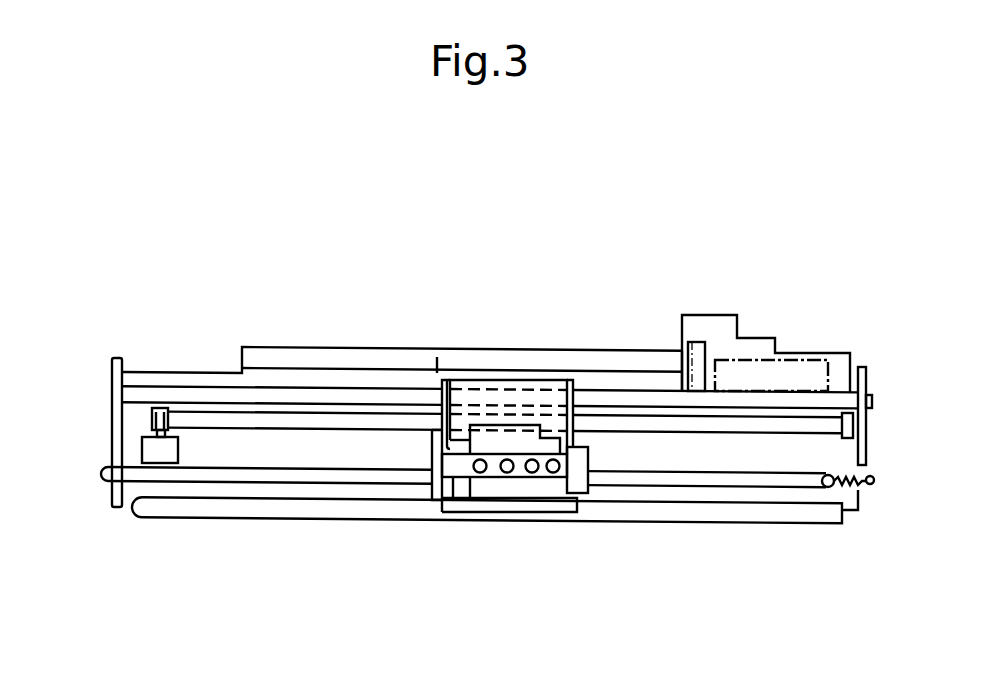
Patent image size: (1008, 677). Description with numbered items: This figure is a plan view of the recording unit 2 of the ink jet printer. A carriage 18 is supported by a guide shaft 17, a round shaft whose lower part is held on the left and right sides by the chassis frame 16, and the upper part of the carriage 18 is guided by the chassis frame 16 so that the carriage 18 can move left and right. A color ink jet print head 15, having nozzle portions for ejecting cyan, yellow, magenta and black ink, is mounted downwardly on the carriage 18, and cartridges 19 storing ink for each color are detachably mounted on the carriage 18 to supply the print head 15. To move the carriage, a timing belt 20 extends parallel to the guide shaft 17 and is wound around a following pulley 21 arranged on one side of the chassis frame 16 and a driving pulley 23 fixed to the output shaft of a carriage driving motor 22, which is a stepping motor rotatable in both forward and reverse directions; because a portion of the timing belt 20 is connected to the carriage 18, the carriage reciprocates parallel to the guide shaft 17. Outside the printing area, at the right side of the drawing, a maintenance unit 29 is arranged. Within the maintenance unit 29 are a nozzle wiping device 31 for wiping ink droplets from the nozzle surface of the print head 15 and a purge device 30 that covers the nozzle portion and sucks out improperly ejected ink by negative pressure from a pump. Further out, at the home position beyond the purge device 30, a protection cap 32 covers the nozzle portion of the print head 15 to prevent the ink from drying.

The printer 2 is at (391, 528).
The print head 15 is at (503, 400).
The chassis frame 16 is at (97, 443).
The guide shaft 17 is at (313, 401).
The carriage 18 is at (440, 378).
The cartridges 19 is at (522, 470).
The timing belt 20 is at (288, 420).
The following pulley 21 is at (851, 410).
The carriage driving motor 22 is at (163, 452).
The driving pulley 23 is at (160, 406).
The maintenance unit 29 is at (775, 300).
The purge device 30 is at (690, 335).
The nozzle wiping device 31 is at (682, 347).
The protection cap 32 is at (788, 372).